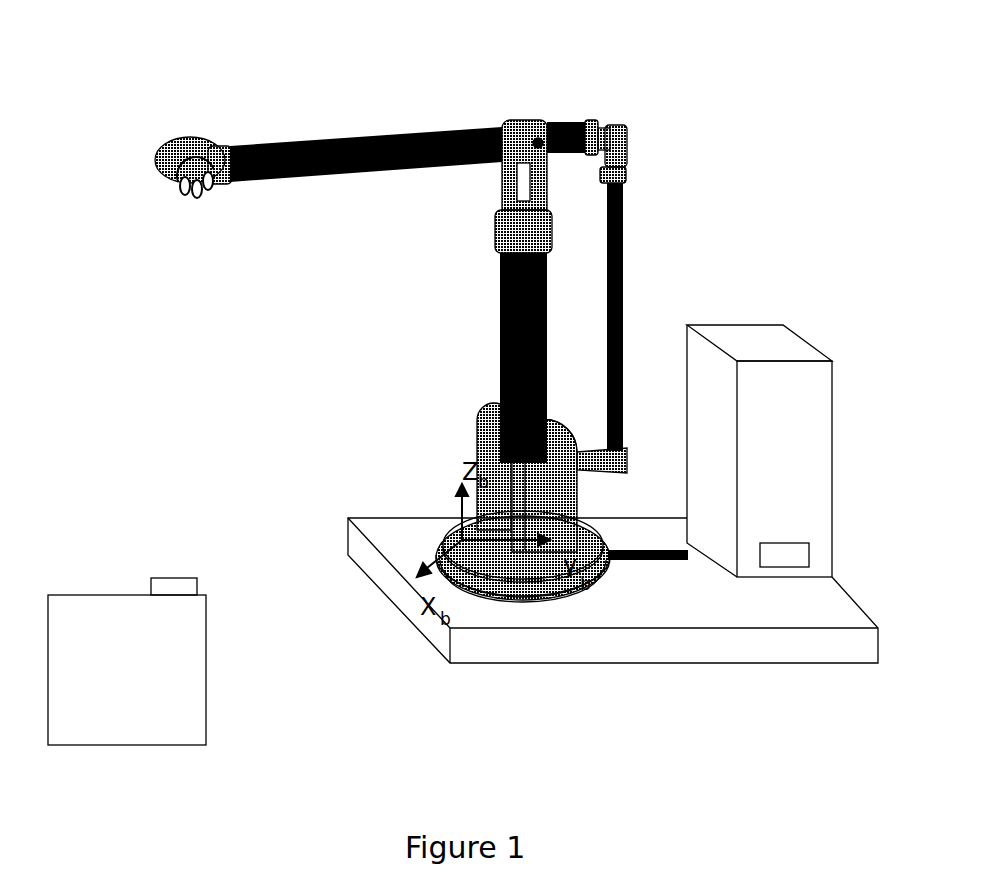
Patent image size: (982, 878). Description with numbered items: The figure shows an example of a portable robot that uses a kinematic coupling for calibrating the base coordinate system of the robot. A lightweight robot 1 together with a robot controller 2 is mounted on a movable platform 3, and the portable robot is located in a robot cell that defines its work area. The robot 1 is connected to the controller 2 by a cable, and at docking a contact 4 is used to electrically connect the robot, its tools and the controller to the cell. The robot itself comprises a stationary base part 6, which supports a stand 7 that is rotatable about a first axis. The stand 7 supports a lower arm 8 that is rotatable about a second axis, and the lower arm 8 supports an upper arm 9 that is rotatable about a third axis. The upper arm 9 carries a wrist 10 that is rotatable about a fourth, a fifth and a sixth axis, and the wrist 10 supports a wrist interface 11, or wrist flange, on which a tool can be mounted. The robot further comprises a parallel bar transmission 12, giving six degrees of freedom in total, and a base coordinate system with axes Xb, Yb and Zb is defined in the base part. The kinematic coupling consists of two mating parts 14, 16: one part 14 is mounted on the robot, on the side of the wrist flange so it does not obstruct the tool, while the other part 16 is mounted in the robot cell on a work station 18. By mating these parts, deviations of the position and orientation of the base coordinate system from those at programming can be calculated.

The lightweight robot 1 is at (535, 74).
The robot controller 2 is at (779, 345).
The movable platform 3 is at (827, 608).
The contact 4 is at (775, 558).
The stationary base part 6 is at (535, 593).
The stand 7 is at (553, 480).
The lower arm 8 is at (497, 328).
The upper arm 9 is at (350, 137).
The wrist 10 is at (193, 142).
The wrist interface 11 is at (183, 162).
The parallel bar transmission 12 is at (623, 262).
The kinematic coupling part 14 is at (207, 187).
The kinematic coupling part 16 is at (173, 578).
The work station 18 is at (185, 695).